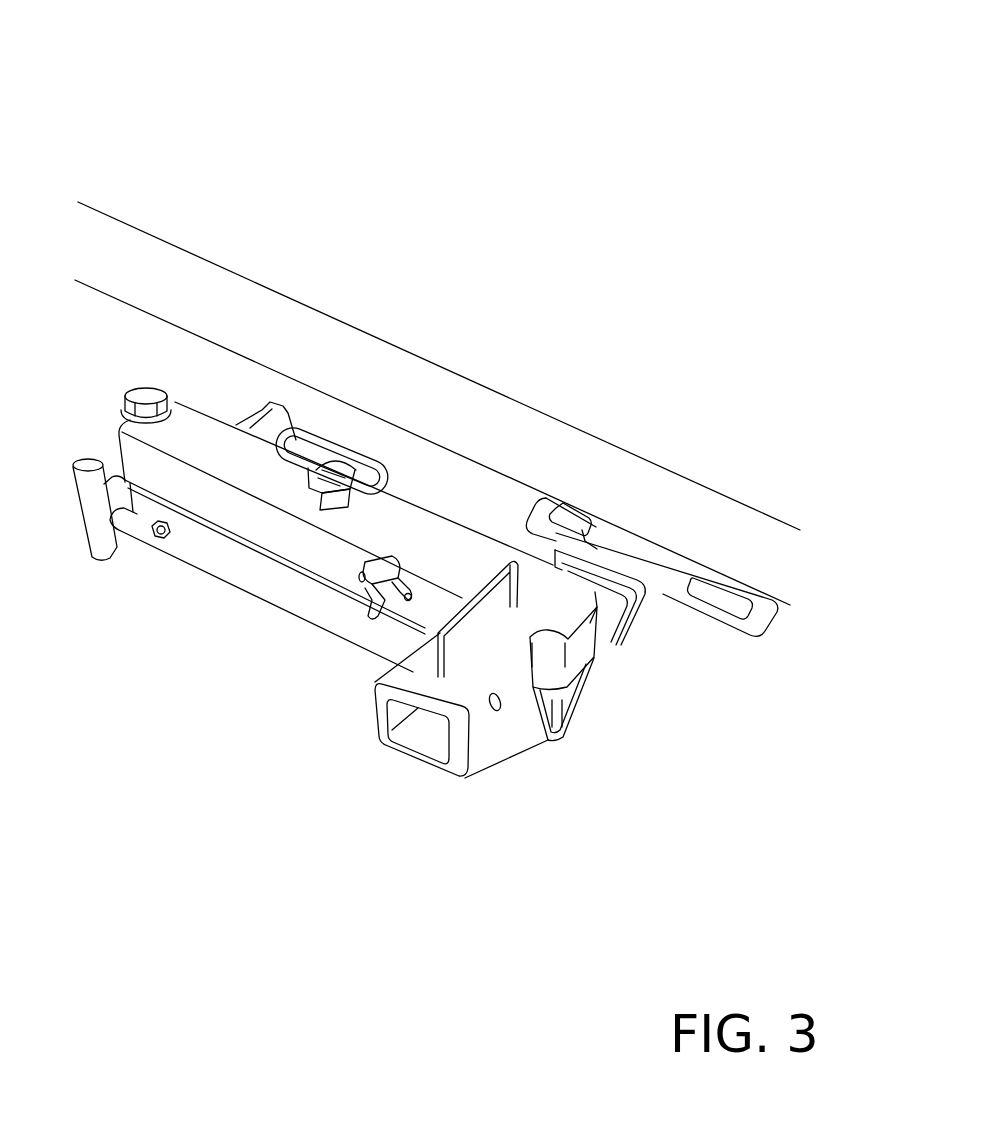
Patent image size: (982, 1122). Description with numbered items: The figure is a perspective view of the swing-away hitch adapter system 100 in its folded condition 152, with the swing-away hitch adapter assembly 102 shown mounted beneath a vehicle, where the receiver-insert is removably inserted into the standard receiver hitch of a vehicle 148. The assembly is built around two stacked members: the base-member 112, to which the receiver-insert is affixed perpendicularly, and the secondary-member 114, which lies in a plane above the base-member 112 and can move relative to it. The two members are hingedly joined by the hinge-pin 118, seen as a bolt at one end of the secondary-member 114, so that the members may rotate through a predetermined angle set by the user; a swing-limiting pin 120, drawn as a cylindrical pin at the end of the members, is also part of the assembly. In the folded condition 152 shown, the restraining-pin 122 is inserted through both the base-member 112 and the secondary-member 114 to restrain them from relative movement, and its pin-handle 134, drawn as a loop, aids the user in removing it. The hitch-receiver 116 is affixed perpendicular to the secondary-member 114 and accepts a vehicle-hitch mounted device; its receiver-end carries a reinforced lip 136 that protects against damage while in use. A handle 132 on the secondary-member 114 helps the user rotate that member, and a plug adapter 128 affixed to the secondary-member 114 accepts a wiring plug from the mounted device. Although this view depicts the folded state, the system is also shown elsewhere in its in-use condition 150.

The swing-away hitch adapter system 100 is at (557, 88).
The swing-away hitch adapter assembly 102 is at (598, 118).
The base-member 112 is at (573, 700).
The secondary-member 114 is at (243, 467).
The hitch-receiver 116 is at (499, 641).
The hinge-pin 118 is at (146, 403).
The swing-limiting pin 120 is at (104, 546).
The restraining-pin 122 is at (318, 503).
The plug adapter 128 is at (380, 592).
The handle 132 is at (453, 634).
The pin-handle 134 is at (328, 440).
The reinforced lip 136 is at (455, 777).
The standard receiver hitch of a vehicle 148 is at (649, 582).
The in-use condition 150 is at (630, 158).
The folded condition 152 is at (667, 200).